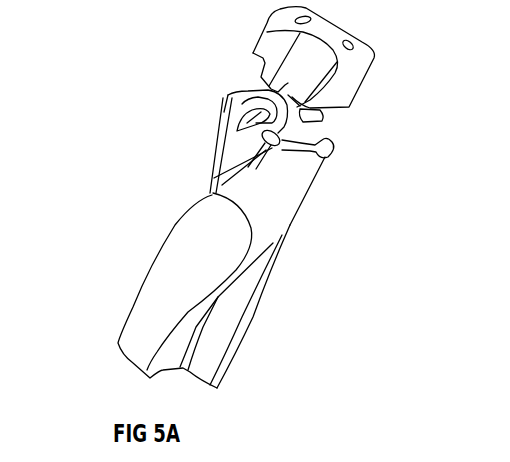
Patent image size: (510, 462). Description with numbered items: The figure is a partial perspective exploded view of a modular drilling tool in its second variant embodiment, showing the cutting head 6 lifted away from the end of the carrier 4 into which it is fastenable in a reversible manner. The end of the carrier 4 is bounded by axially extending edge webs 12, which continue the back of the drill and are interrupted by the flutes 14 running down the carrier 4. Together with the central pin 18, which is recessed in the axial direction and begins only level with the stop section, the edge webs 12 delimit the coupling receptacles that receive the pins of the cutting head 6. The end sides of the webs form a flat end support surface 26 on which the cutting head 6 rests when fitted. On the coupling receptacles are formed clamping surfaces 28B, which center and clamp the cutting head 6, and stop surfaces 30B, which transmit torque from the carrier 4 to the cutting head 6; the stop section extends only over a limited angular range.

The carrier 4 is at (255, 243).
The cutting head 6 is at (354, 68).
The edge webs 12 is at (230, 113).
The flutes 14 is at (200, 365).
The central pin 18 is at (238, 152).
The end support surface 26 is at (333, 143).
The clamping surfaces 28B is at (246, 93).
The stop surfaces 30B is at (238, 128).